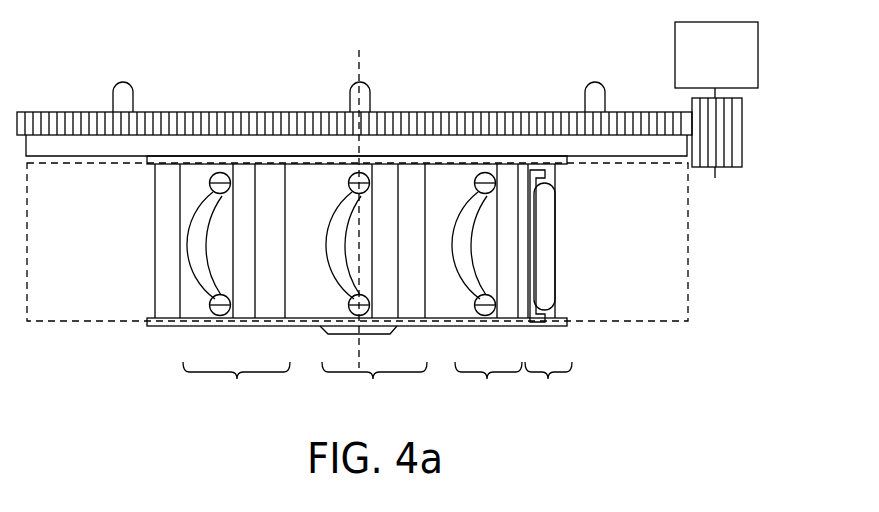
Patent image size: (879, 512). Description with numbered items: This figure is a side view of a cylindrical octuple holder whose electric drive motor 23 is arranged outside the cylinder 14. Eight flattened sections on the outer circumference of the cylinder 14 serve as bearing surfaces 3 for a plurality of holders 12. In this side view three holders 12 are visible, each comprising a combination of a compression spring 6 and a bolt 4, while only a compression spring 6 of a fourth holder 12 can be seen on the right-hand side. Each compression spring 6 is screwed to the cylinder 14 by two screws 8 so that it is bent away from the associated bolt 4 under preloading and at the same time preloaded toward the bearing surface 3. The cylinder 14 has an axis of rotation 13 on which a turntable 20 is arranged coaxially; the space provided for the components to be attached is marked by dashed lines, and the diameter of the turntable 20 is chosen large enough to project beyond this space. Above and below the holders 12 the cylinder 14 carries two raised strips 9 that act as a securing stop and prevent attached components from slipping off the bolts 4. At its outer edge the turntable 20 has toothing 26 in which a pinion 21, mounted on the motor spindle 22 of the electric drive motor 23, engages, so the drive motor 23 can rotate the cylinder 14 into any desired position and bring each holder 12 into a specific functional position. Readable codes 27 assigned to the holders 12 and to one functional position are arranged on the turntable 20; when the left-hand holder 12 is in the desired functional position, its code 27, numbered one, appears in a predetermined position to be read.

The bearing surface 3 is at (300, 187).
The bolt 4 is at (272, 312).
The compression spring 6 is at (216, 312).
The screw 8 is at (222, 310).
The raised strip 9 is at (153, 170).
The holder 12 is at (377, 387).
The axis of rotation 13 is at (359, 68).
The cylinder 14 is at (428, 295).
The turntable 20 is at (663, 150).
The pinion 21 is at (742, 143).
The motor spindle 22 is at (717, 97).
The electric drive motor 23 is at (752, 47).
The toothing 26 is at (475, 122).
The readable code 27 is at (113, 100).